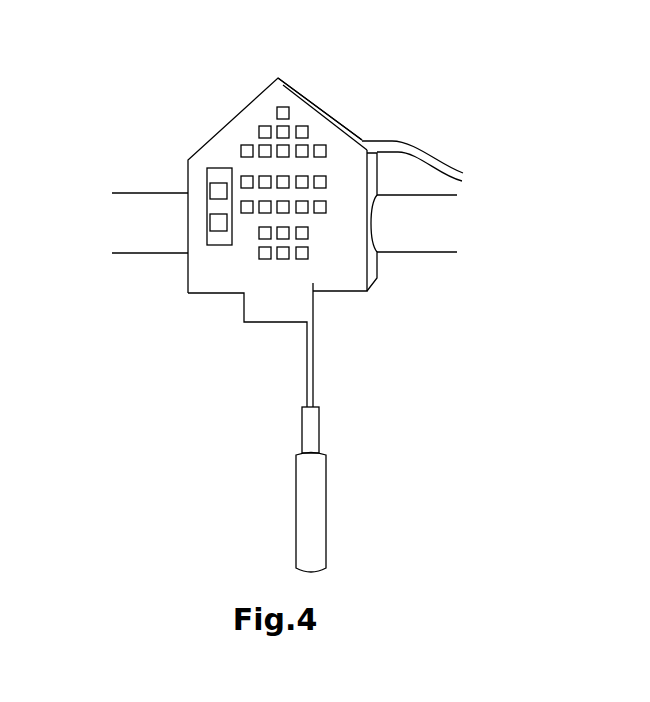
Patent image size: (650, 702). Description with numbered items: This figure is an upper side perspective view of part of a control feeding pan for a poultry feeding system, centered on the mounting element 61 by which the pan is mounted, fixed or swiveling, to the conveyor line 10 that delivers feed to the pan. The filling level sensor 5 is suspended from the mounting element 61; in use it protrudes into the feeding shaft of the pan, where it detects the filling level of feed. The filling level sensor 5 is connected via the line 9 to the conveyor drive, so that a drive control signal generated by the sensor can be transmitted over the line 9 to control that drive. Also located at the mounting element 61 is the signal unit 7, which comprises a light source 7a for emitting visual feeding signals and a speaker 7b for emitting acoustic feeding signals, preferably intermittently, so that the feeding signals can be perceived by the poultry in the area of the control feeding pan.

The filling level sensor 5 is at (316, 545).
The signal unit 7 is at (207, 207).
The light source 7a is at (218, 188).
The speaker 7b is at (214, 226).
The line 9 is at (428, 160).
The conveyor line 10 is at (430, 232).
The mounting element 61 is at (326, 110).